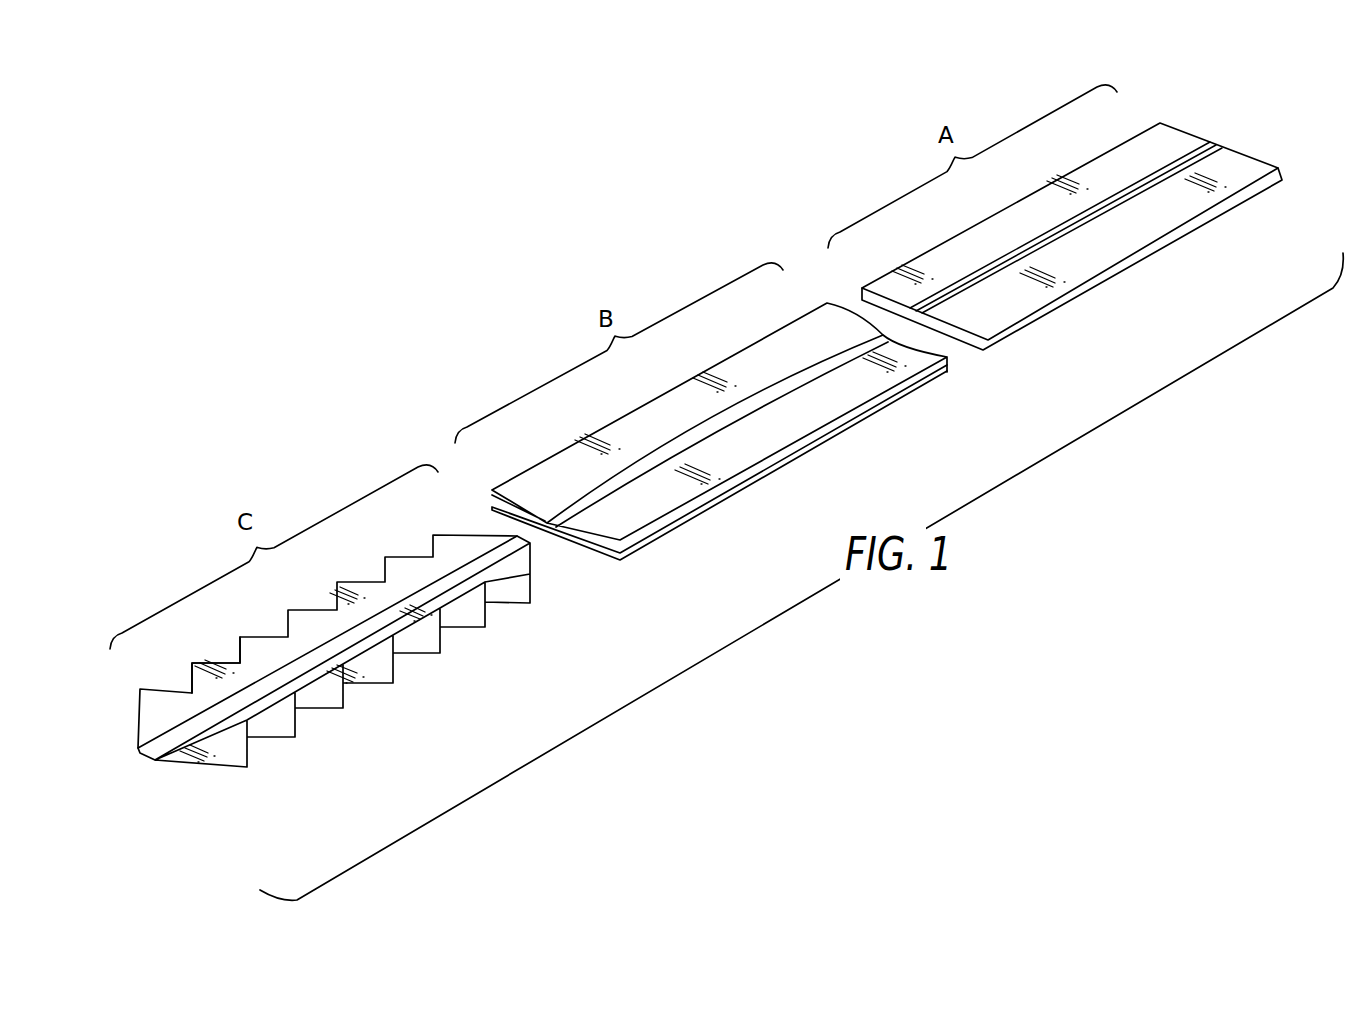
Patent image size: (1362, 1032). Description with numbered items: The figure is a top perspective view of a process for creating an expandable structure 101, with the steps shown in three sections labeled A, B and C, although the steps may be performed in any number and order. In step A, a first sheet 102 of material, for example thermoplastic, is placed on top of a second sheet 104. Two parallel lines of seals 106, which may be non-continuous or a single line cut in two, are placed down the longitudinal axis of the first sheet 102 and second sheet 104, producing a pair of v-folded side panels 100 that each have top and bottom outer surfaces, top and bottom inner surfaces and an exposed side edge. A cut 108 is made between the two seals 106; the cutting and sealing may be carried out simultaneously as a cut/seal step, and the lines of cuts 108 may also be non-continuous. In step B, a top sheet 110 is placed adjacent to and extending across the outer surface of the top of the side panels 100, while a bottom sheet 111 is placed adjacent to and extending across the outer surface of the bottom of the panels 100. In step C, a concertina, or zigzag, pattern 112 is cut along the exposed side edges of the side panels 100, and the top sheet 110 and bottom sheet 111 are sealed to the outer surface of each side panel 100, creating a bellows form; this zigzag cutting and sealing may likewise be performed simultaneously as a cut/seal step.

The v-folded side panels 100 is at (1160, 150).
The expandable structure 101 is at (223, 645).
The first sheet 102 is at (1167, 217).
The second sheet 104 is at (1160, 253).
The lines of seals 106 is at (1037, 232).
The cut 108 is at (987, 277).
The top sheet 110 is at (765, 445).
The bottom sheet 111 is at (740, 493).
The concertina pattern 112 is at (360, 703).